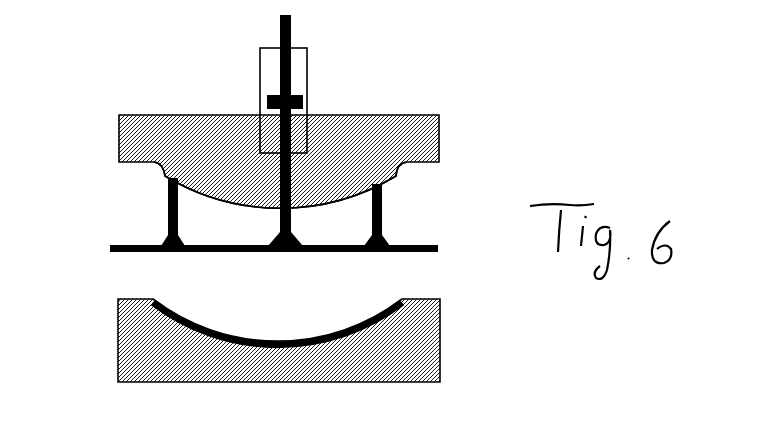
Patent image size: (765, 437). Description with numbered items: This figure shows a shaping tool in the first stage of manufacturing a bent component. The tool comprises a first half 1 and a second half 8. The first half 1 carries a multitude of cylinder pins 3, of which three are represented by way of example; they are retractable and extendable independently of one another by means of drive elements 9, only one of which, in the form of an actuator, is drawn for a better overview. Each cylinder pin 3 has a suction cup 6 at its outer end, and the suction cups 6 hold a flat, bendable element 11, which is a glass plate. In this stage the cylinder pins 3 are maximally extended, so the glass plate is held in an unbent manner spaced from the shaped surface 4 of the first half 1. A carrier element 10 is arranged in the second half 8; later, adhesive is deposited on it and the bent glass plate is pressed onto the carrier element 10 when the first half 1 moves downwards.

The first half 1 is at (439, 135).
The cylinder pins 3 is at (166, 208).
The surface 4 is at (161, 181).
The suction cup 6 is at (183, 236).
The second half 8 is at (440, 336).
The drive element 9 is at (307, 85).
The carrier element 10 is at (172, 315).
The flat, bendable element 11 is at (334, 252).